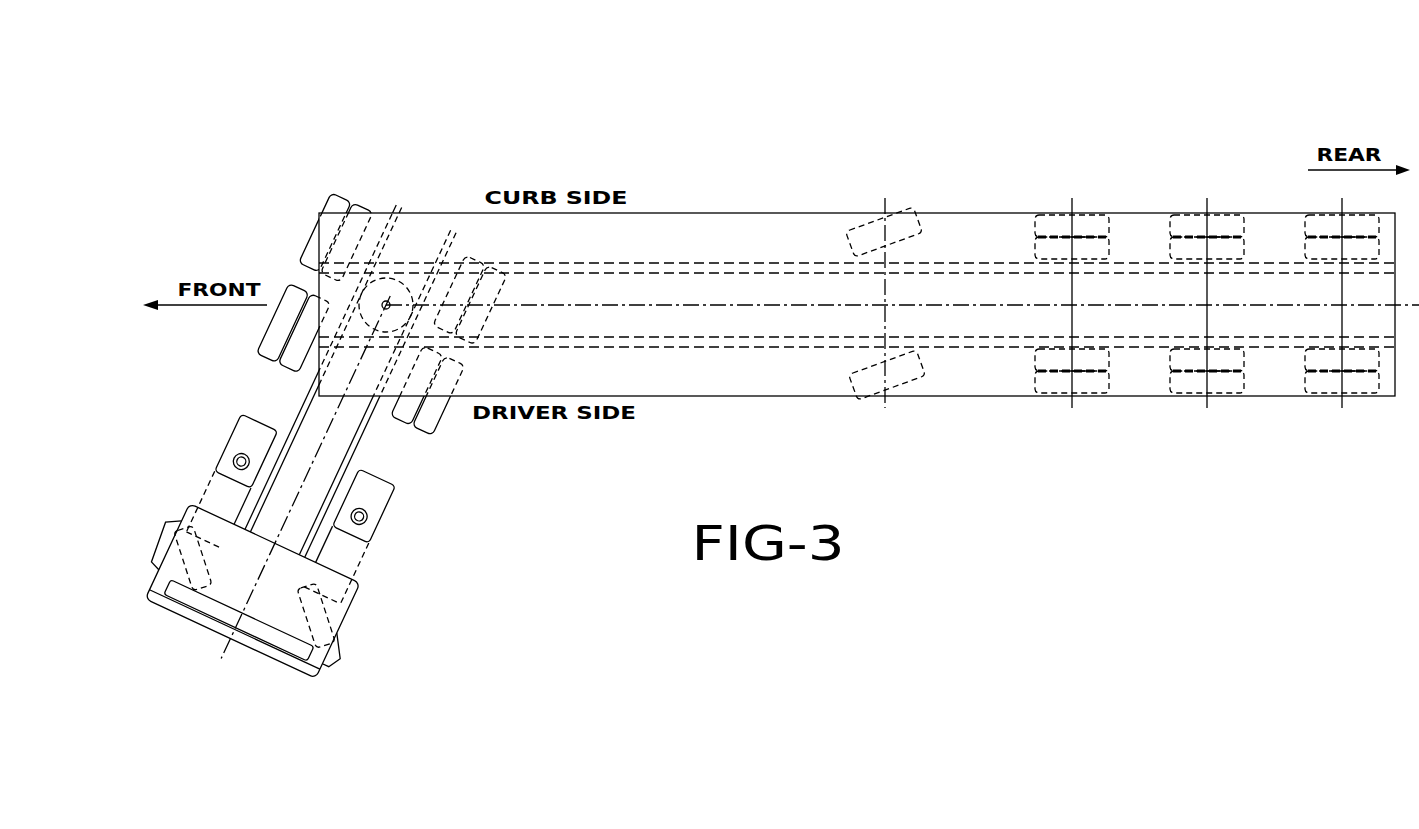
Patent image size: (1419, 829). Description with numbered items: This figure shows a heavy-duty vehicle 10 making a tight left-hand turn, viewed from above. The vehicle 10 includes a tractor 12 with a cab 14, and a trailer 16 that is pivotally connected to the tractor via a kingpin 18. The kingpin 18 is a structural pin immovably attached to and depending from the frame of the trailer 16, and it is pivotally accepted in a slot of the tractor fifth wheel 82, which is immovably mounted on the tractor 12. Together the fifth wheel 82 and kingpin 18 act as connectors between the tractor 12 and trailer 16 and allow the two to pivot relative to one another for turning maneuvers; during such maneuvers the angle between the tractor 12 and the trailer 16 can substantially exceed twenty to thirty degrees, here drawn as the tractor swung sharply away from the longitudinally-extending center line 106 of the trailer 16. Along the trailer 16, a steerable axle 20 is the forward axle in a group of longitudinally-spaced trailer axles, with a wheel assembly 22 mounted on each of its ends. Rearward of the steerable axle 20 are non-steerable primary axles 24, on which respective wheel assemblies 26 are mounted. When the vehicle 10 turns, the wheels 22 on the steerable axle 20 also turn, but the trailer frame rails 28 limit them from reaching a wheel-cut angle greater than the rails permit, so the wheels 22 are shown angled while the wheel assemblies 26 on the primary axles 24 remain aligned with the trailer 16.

The heavy-duty vehicle 10 is at (298, 144).
The tractor 12 is at (356, 600).
The cab 14 is at (292, 637).
The trailer 16 is at (680, 208).
The kingpin 18 is at (386, 305).
The steerable axle 20 is at (890, 294).
The wheel assembly 22 is at (868, 242).
The non-steerable primary axle 24 is at (1066, 281).
The wheel assembly 26 is at (1055, 385).
The trailer frame rail 28 is at (797, 263).
The tractor fifth wheel 82 is at (407, 288).
The longitudinally-extending center line 106 is at (842, 303).